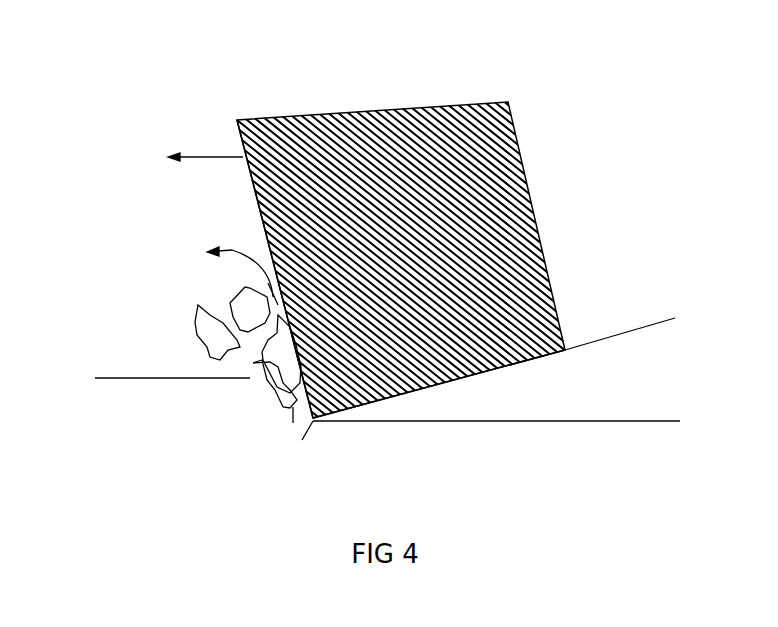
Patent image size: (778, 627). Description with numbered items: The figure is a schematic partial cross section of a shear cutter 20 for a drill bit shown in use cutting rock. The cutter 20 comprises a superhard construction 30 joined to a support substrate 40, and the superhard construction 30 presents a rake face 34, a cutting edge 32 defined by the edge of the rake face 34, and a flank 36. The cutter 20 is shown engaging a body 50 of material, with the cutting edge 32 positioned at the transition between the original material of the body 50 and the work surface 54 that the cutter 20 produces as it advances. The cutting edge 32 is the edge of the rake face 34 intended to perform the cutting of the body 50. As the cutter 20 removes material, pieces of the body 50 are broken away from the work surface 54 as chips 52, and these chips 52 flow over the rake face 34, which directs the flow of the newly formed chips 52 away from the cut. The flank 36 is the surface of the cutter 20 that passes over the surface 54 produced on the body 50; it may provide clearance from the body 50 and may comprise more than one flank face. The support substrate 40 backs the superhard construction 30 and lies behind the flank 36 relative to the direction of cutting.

The cutter 20 is at (211, 99).
The superhard construction 30 is at (367, 111).
The cutting edge 32 is at (302, 440).
The rake face 34 is at (263, 232).
The flank 36 is at (497, 370).
The support substrate 40 is at (620, 304).
The body 50 is at (172, 407).
The chips 52 is at (195, 322).
The work surface of the body 54 is at (452, 421).